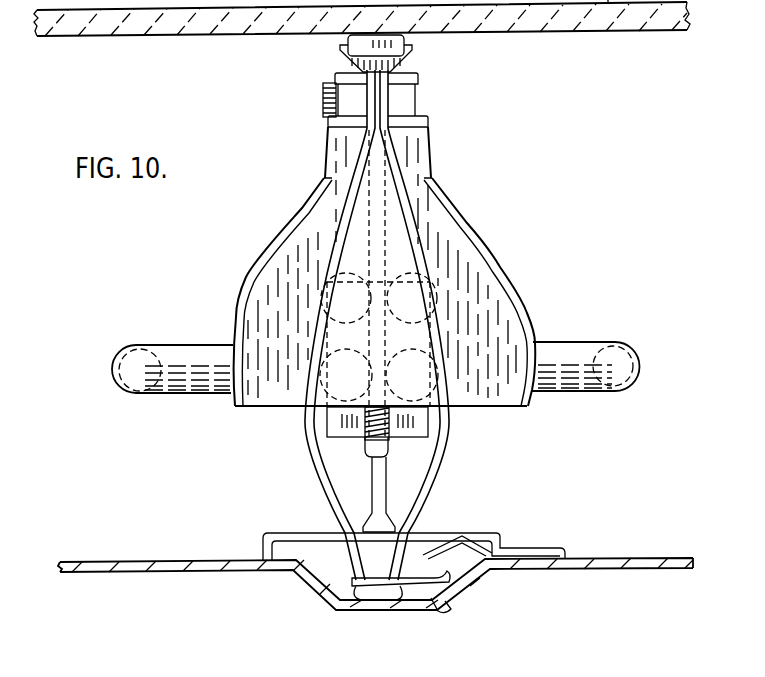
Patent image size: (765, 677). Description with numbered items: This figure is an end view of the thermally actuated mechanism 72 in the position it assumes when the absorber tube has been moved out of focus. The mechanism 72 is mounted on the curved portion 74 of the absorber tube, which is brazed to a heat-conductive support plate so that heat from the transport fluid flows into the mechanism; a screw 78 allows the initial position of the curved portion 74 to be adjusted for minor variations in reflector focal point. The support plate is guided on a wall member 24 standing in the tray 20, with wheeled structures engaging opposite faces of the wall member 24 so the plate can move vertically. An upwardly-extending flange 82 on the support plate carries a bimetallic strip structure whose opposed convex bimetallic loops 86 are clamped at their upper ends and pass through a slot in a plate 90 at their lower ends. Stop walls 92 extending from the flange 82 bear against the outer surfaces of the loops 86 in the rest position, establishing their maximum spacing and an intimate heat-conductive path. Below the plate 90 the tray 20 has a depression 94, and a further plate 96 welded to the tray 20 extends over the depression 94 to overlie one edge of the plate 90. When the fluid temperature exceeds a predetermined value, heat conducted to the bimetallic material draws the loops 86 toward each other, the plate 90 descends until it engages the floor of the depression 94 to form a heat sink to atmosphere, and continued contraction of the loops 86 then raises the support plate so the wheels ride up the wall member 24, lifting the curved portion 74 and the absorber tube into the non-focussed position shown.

The tray 20 is at (177, 572).
The wall member 24 is at (386, 480).
The mechanism 72 is at (607, 211).
The curved portion 74 is at (570, 353).
The screw 78 is at (368, 452).
The upwardly-extending flange 82 is at (413, 143).
The bimetallic loops 86 is at (446, 436).
The plate 90 is at (377, 583).
The stop walls 92 is at (265, 258).
The depression 94 is at (455, 612).
The further plate 96 is at (552, 548).